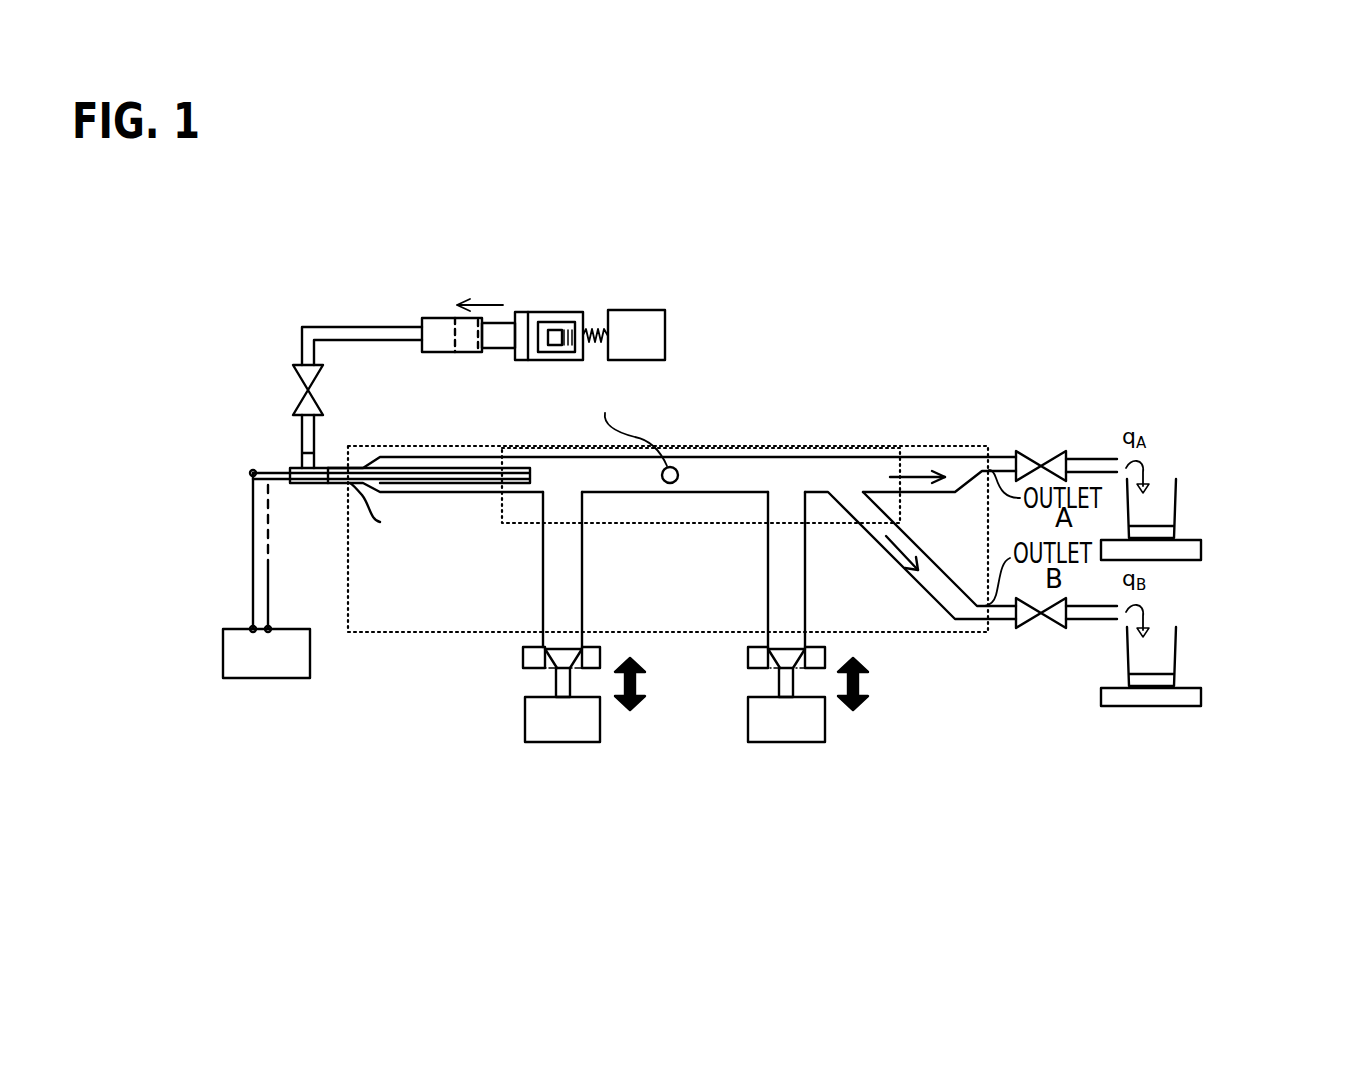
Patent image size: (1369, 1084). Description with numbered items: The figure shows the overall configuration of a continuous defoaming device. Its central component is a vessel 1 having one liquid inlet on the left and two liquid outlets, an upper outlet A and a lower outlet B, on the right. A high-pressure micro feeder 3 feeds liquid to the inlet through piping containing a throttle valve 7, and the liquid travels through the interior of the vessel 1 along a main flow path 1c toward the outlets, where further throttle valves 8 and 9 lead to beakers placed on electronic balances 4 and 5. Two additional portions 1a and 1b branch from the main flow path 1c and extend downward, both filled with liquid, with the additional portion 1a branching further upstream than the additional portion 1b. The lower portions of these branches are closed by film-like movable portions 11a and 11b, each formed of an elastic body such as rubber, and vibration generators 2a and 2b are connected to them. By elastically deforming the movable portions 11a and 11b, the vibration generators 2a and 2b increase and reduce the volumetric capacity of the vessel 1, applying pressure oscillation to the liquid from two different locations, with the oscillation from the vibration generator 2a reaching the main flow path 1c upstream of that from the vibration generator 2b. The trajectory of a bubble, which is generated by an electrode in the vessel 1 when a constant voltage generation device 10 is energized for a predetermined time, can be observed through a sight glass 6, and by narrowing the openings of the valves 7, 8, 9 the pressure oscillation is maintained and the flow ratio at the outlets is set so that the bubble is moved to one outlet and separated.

The vessel 1 is at (633, 539).
The additional portion 1a is at (543, 563).
The additional portion 1b is at (768, 563).
The main flow path 1c is at (708, 452).
The vibration generator 2a is at (560, 742).
The vibration generator 2b is at (783, 742).
The high-pressure micro feeder 3 is at (557, 312).
The electronic balance 4 is at (1190, 538).
The electronic balance 5 is at (1147, 706).
The sight glass 6 is at (727, 462).
The valve 7 is at (305, 391).
The valve 8 is at (1045, 450).
The valve 9 is at (1045, 628).
The constant voltage generation device 10 is at (223, 648).
The movable portion 11a is at (525, 657).
The movable portion 11b is at (748, 657).